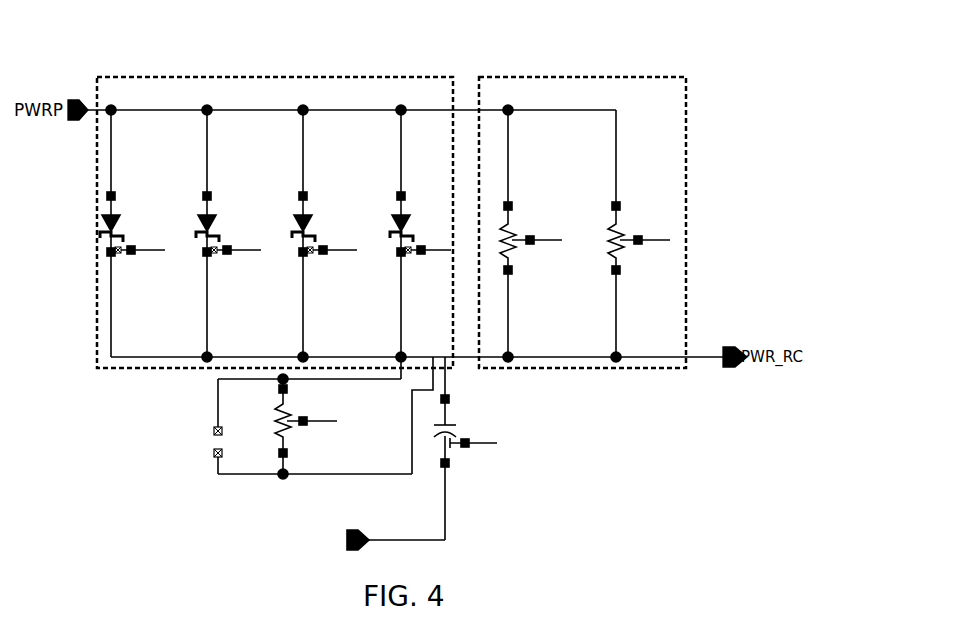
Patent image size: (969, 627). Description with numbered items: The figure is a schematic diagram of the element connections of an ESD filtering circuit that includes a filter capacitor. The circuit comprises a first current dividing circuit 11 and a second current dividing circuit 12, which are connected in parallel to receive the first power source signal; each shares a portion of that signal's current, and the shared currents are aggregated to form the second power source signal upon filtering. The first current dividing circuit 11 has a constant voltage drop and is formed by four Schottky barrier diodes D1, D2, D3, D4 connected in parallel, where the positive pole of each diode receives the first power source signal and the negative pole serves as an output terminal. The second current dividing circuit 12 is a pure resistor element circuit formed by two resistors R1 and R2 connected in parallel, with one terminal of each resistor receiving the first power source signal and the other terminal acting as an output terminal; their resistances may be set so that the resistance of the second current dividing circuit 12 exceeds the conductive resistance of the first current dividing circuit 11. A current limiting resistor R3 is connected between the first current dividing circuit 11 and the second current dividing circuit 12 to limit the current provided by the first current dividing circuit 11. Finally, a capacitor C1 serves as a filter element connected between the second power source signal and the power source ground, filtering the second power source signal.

The first current dividing circuit 11 is at (178, 77).
The second current dividing circuit 12 is at (551, 77).
The Schottky barrier diode D1 is at (132, 231).
The Schottky barrier diode D2 is at (228, 233).
The Schottky barrier diode D3 is at (324, 233).
The Schottky barrier diode D4 is at (420, 242).
The resistor R1 is at (531, 233).
The resistor R2 is at (639, 236).
The current limiting resistor R3 is at (306, 426).
The capacitor C1 is at (465, 448).